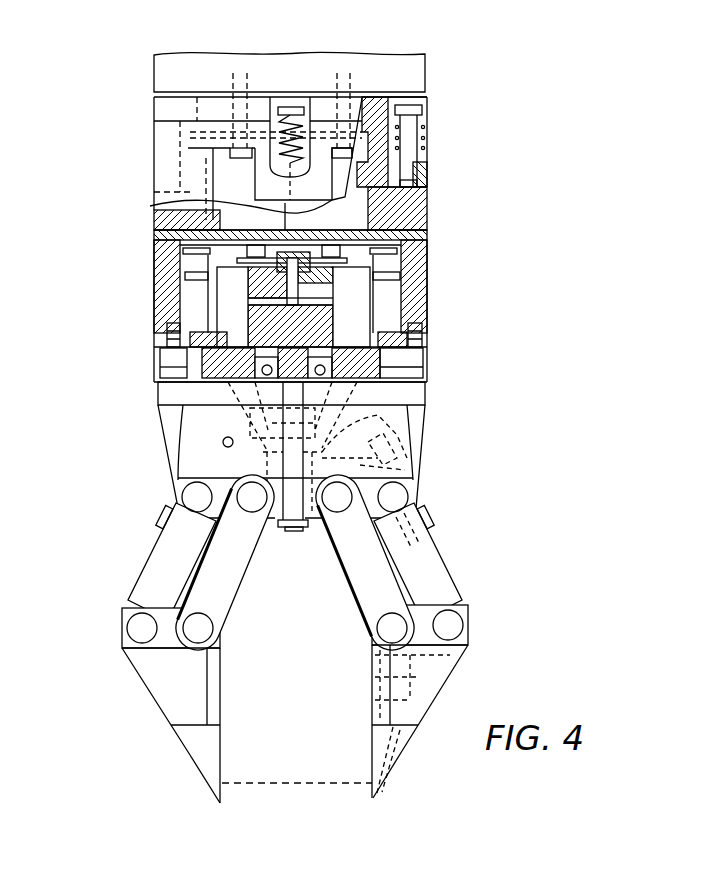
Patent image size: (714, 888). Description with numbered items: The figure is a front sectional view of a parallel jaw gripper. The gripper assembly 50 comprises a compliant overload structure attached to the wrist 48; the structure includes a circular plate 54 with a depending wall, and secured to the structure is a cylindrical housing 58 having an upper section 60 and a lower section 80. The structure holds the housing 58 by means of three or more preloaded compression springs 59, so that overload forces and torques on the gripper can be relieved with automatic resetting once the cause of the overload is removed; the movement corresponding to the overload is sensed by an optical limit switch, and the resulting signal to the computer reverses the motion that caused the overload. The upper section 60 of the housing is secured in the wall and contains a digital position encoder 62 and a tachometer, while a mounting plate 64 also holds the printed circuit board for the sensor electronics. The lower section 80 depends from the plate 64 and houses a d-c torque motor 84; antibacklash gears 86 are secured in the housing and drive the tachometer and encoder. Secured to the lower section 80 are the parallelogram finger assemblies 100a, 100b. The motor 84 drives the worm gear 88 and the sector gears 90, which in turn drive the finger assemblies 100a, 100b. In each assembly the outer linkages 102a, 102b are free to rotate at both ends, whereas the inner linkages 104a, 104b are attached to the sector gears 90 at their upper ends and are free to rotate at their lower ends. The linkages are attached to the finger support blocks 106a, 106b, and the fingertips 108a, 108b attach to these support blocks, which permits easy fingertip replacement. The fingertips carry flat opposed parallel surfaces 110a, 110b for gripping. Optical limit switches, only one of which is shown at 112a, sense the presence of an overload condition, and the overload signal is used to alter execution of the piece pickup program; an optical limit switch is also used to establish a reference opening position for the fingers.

The wrist 48 is at (425, 72).
The gripper assembly 50 is at (142, 337).
The circular plate 54 is at (160, 136).
The cylindrical housing 58 is at (434, 307).
The preloaded compression springs 59 is at (298, 140).
The upper section 60 is at (160, 204).
The digital position encoder 62 is at (425, 211).
The mounting plate 64 is at (427, 235).
The lower section 80 is at (214, 308).
The d-c torque motor 84 is at (357, 317).
The antibacklash gears 86 is at (237, 258).
The worm gear 88 is at (380, 467).
The sector gears 90 is at (387, 432).
The finger assembly 100a is at (434, 649).
The finger assembly 100b is at (189, 649).
The outer linkage 102a is at (430, 543).
The outer linkage 102b is at (160, 574).
The inner linkage 104a is at (362, 597).
The inner linkage 104b is at (225, 601).
The finger support block 106a is at (447, 680).
The finger support block 106b is at (166, 709).
The fingertip 108a is at (373, 755).
The fingertip 108b is at (215, 767).
The flat opposed parallel surface 110a is at (372, 742).
The flat opposed parallel surface 110b is at (222, 744).
The optical limit switch 112a is at (222, 444).